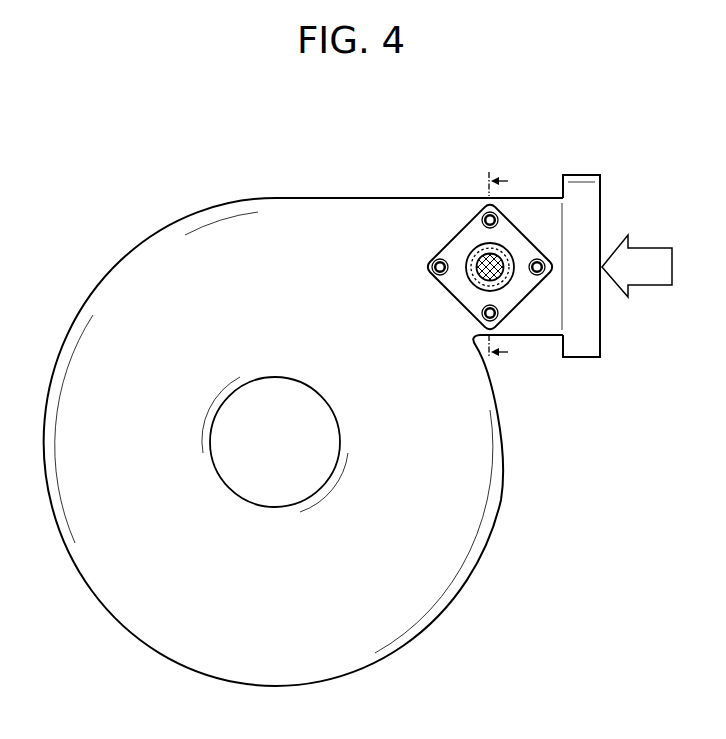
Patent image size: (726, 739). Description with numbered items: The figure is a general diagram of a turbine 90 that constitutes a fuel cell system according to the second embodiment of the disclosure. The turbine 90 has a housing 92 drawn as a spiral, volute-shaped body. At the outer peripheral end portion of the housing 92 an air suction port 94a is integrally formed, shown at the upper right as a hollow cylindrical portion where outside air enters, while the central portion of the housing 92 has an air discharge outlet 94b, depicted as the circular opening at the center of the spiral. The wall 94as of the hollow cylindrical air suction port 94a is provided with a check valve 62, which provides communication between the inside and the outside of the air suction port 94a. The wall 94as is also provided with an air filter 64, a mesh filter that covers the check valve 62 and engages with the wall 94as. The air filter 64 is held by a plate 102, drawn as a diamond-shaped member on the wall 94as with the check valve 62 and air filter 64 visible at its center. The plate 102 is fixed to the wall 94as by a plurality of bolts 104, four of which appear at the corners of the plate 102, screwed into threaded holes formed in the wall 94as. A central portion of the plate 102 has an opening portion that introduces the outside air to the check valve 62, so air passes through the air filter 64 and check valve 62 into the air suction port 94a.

The turbine 90 is at (620, 139).
The housing 92 is at (158, 236).
The air suction port 94a is at (532, 219).
The wall 94as is at (527, 307).
The air discharge outlet 94b is at (278, 492).
The plate 102 is at (462, 240).
The bolts 104 is at (427, 263).
The check valve 62 is at (475, 282).
The air filter 64 is at (478, 265).